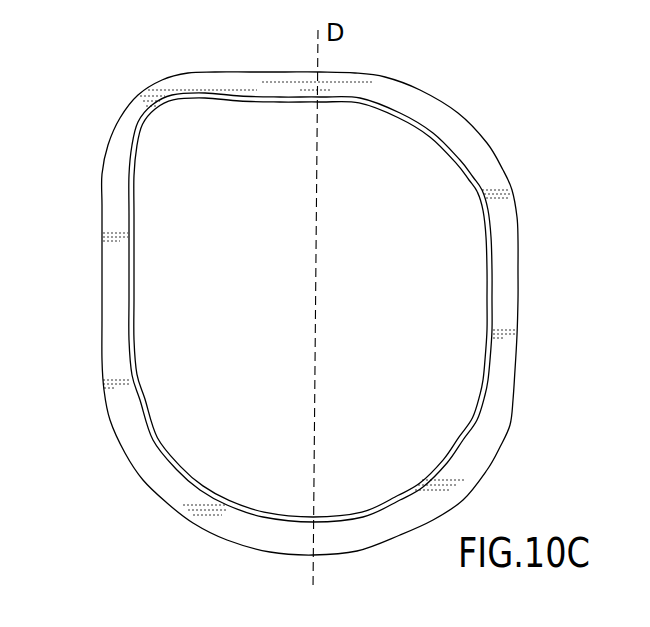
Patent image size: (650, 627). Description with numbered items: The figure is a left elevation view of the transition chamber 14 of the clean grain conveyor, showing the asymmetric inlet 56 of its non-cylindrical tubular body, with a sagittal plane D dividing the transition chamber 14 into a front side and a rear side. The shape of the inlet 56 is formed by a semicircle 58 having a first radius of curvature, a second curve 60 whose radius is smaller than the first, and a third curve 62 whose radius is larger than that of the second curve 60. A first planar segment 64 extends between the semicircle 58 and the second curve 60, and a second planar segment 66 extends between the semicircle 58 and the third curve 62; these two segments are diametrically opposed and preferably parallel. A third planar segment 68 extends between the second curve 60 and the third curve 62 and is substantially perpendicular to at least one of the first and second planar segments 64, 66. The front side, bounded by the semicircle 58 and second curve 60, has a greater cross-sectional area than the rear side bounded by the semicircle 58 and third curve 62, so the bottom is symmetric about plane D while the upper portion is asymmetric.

The transition chamber 14 is at (198, 561).
The asymmetric inlet 56 is at (492, 277).
The semicircle 58 is at (452, 458).
The second curve 60 is at (138, 135).
The third curve 62 is at (422, 128).
The first planar segment 64 is at (127, 298).
The second planar segment 66 is at (486, 328).
The third planar segment 68 is at (250, 98).